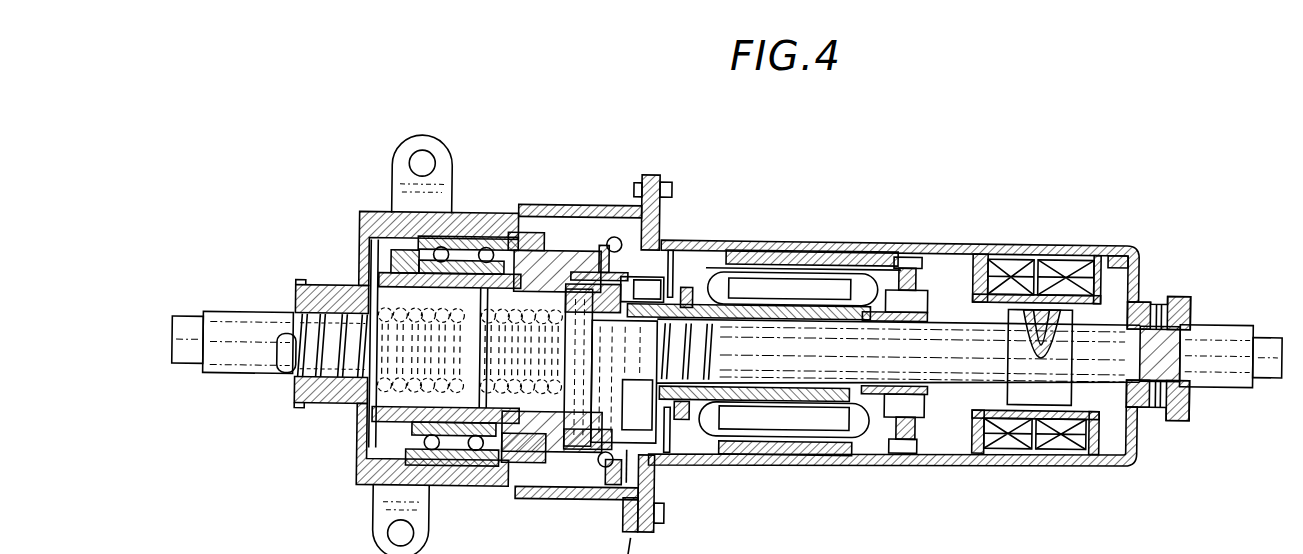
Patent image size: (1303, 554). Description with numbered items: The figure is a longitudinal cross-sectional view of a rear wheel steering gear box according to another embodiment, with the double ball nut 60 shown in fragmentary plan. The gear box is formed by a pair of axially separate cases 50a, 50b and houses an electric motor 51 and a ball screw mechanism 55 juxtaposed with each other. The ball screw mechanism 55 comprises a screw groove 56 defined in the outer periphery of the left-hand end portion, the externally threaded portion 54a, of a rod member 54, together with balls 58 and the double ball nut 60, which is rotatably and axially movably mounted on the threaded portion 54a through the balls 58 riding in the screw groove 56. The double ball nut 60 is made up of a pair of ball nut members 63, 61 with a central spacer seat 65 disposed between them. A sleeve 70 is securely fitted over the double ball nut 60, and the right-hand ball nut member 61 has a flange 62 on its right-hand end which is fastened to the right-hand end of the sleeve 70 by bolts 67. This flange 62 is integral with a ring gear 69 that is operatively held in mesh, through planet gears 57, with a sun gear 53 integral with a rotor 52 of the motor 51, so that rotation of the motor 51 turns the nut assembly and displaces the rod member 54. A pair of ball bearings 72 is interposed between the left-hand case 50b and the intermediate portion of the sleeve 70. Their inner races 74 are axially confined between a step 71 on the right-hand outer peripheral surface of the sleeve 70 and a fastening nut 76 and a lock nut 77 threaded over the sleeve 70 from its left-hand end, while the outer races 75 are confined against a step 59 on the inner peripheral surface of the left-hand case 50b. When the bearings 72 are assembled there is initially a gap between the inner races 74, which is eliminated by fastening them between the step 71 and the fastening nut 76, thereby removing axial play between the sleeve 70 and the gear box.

The case 50a is at (962, 235).
The case 50b is at (587, 201).
The electric motor 51 is at (867, 262).
The rotor 52 is at (792, 266).
The sun gear 53 is at (969, 356).
The rod member 54 is at (219, 388).
The externally threaded portion 54a is at (293, 316).
The ball screw mechanism 55 is at (662, 265).
The screw groove 56 is at (287, 374).
The planet gears 57 is at (706, 260).
The balls 58 is at (563, 387).
The step 59 is at (393, 205).
The double ball nut 60 is at (524, 270).
The ball nut member 61 is at (542, 298).
The flange 62 is at (675, 208).
The ball nut member 63 is at (360, 278).
The central spacer seat 65 is at (497, 306).
The bolts 67 is at (583, 279).
The ring gear 69 is at (673, 280).
The sleeve 70 is at (540, 432).
The step 71 is at (507, 452).
The ball bearings 72 is at (486, 246).
The inner races 74 is at (365, 487).
The outer races 75 is at (478, 448).
The fastening nut 76 is at (363, 227).
The lock nut 77 is at (360, 252).